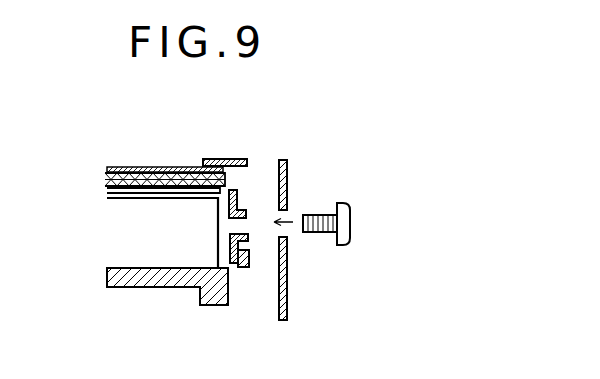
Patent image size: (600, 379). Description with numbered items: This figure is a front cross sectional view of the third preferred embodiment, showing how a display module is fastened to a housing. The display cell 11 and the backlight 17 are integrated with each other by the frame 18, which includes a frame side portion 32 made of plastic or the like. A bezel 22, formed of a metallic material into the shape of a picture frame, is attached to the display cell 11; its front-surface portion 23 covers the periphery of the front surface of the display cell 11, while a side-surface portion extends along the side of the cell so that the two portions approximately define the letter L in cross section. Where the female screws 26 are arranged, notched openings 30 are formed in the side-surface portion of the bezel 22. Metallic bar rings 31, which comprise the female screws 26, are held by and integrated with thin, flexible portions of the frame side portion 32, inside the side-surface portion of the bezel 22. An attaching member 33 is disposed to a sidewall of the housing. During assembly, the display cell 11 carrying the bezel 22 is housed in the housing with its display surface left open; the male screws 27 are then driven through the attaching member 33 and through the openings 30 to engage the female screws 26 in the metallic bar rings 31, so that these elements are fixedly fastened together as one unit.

The display cell 11 is at (123, 162).
The backlight 17 is at (133, 250).
The frame 18 is at (172, 283).
The bezel 22 is at (248, 150).
The front-surface portion 23 is at (216, 157).
The female screws 26 is at (238, 213).
The male screws 27 is at (352, 217).
The notched openings 30 is at (246, 198).
The metallic bar rings 31 is at (228, 265).
The frame side portion 32 is at (248, 262).
The attaching member 33 is at (288, 277).